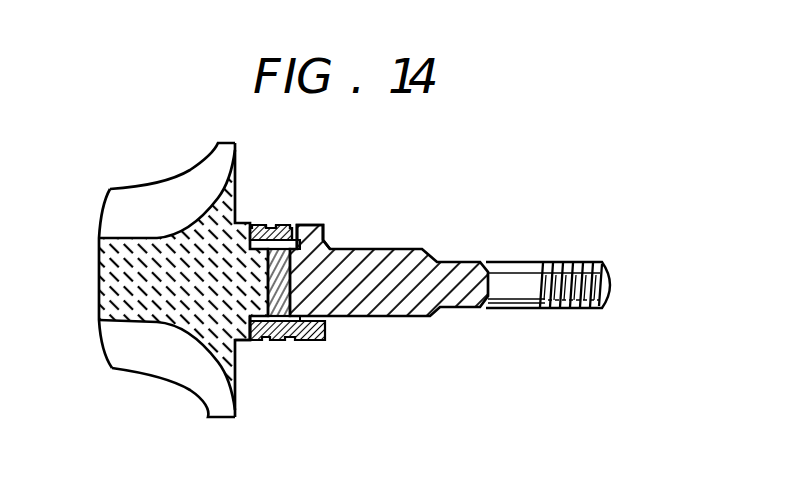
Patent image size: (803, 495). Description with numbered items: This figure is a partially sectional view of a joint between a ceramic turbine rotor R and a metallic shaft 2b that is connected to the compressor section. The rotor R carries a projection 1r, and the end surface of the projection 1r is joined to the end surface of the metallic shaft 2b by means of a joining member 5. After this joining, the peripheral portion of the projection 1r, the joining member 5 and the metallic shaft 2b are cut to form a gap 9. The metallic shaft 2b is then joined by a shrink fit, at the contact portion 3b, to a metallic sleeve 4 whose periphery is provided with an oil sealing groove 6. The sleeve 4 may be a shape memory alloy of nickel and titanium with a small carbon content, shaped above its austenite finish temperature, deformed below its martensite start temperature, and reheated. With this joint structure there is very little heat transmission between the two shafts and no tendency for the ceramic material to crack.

The ceramic turbine rotor R is at (173, 313).
The projection 1r is at (245, 343).
The metallic shaft 2b is at (407, 302).
The metallic sleeve 4 is at (314, 224).
The oil sealing groove 6 is at (263, 226).
The gap 9 is at (291, 226).
The joining member 5 is at (327, 323).
The contact portion 3b is at (307, 343).